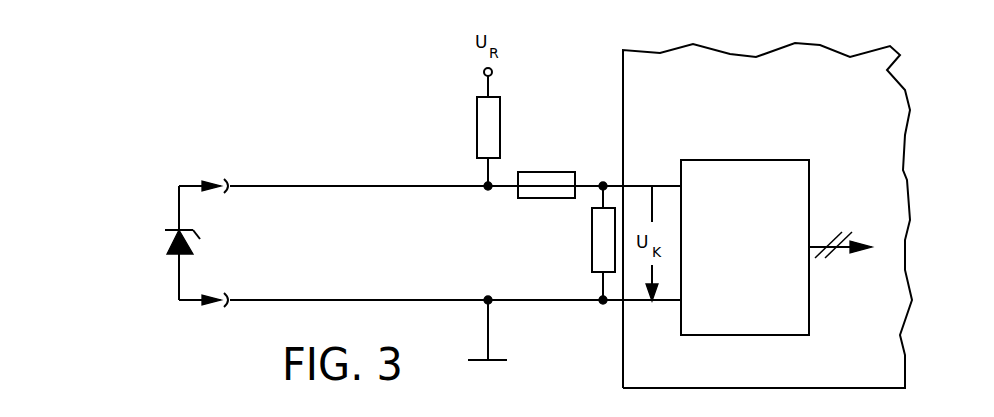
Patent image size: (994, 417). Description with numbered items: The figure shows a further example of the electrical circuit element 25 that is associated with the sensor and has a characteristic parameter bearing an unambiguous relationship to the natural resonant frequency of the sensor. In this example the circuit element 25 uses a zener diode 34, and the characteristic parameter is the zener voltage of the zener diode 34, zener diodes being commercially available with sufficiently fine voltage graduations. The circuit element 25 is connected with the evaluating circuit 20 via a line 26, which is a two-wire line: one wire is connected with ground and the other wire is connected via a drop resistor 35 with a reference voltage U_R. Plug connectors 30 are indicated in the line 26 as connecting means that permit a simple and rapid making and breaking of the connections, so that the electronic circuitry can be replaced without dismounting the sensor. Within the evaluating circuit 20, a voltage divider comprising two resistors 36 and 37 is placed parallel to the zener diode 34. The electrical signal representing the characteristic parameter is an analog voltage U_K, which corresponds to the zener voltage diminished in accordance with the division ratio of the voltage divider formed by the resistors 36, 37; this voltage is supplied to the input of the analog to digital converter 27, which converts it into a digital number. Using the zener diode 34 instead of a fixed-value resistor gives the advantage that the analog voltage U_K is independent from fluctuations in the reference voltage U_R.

The evaluating circuit 20 is at (730, 68).
The electrical circuit element 25 is at (155, 213).
The line 26 is at (310, 178).
The analog to digital converter 27 is at (717, 167).
The plug connectors 30 is at (228, 165).
The zener diode 34 is at (167, 243).
The drop resistor 35 is at (490, 128).
The resistor 36 is at (550, 185).
The resistor 37 is at (603, 242).